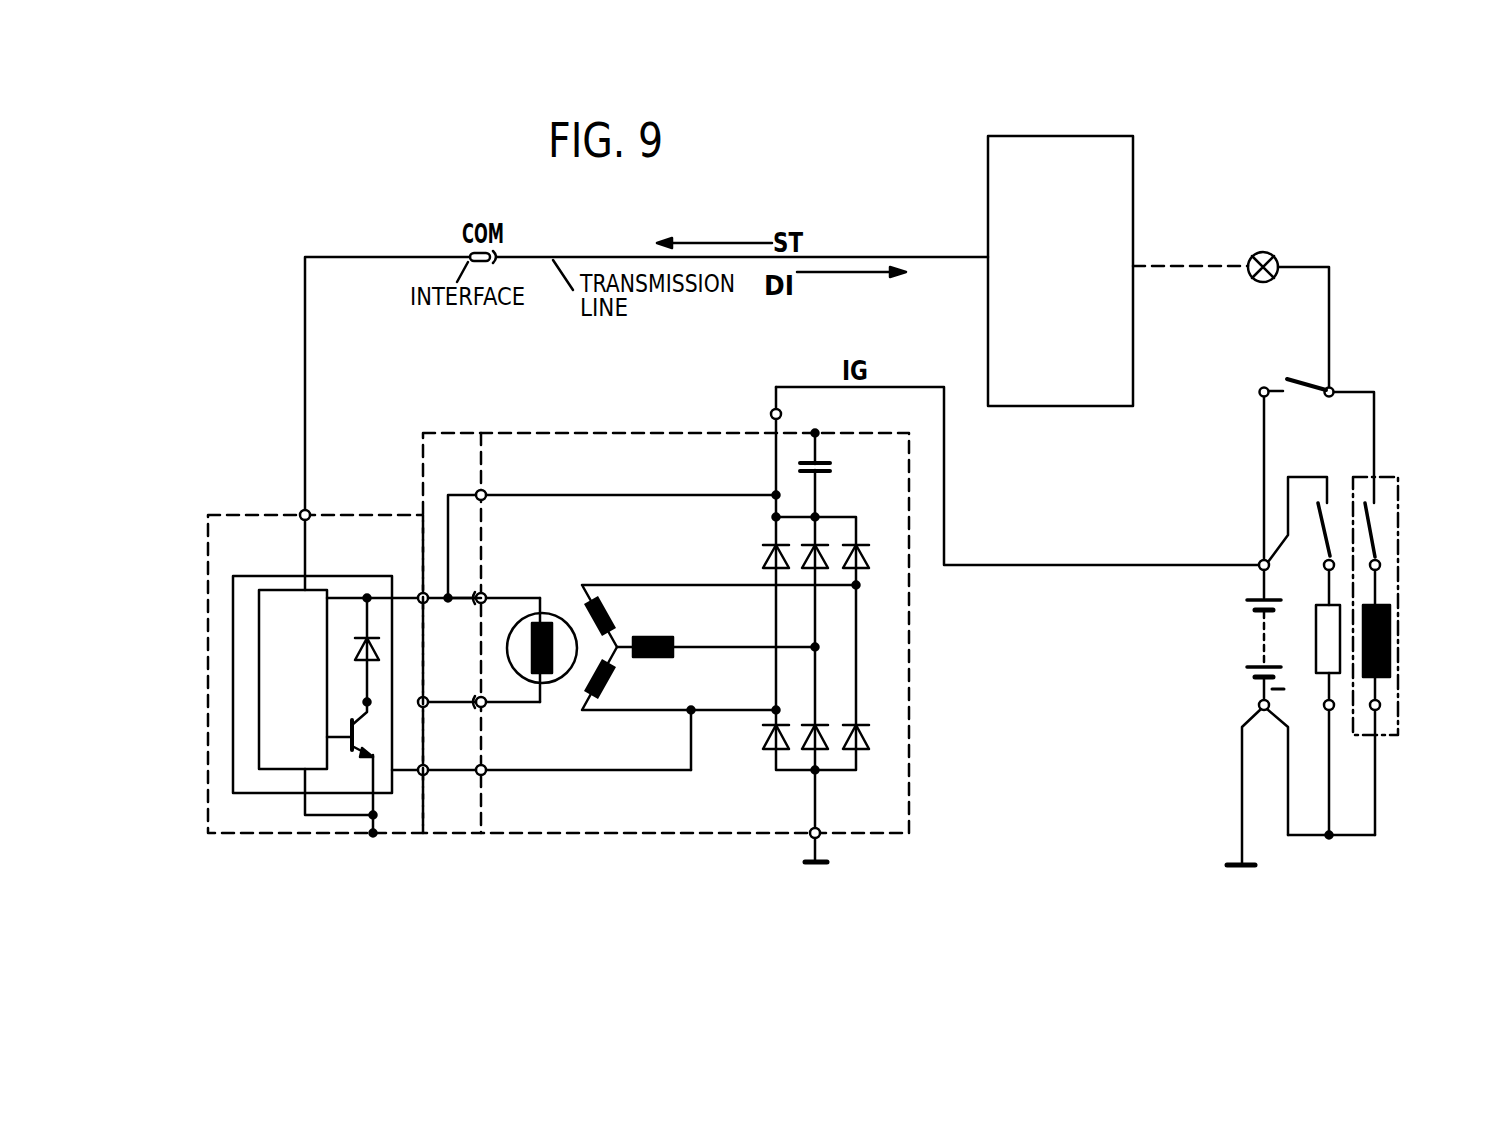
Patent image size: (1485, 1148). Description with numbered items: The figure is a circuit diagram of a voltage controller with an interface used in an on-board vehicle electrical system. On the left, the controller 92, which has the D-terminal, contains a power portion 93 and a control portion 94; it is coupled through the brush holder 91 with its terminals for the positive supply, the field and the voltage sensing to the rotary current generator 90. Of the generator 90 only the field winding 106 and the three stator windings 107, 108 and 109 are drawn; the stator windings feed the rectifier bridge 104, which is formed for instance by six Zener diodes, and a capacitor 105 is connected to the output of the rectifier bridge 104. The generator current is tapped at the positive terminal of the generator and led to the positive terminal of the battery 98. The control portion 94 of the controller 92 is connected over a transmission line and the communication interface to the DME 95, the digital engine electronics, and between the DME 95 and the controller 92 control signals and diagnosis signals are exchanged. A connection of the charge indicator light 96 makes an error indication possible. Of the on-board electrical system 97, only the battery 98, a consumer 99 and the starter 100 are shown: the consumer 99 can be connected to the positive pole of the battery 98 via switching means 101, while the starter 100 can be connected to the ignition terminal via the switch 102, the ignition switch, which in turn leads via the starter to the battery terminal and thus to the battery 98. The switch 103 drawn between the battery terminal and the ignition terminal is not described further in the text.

The rotary current generator 90 is at (672, 838).
The brush holder 91 is at (472, 838).
The controller 92 is at (331, 714).
The power portion 93 is at (362, 720).
The control portion 94 is at (306, 717).
The DME 95 is at (1064, 385).
The charge indicator light 96 is at (1275, 252).
The on-board electrical system 97 is at (1320, 626).
The battery 98 is at (1254, 631).
The consumer 99 is at (1325, 650).
The starter 100 is at (1392, 657).
The switching means 101 is at (1313, 527).
The switch 102 is at (1378, 522).
The ignition switch 103 is at (1298, 372).
The rectifier bridge 104 is at (905, 678).
The capacitor 105 is at (822, 478).
The field winding 106 is at (557, 675).
The stator winding 107 is at (622, 622).
The stator winding 108 is at (674, 655).
The stator winding 109 is at (608, 690).